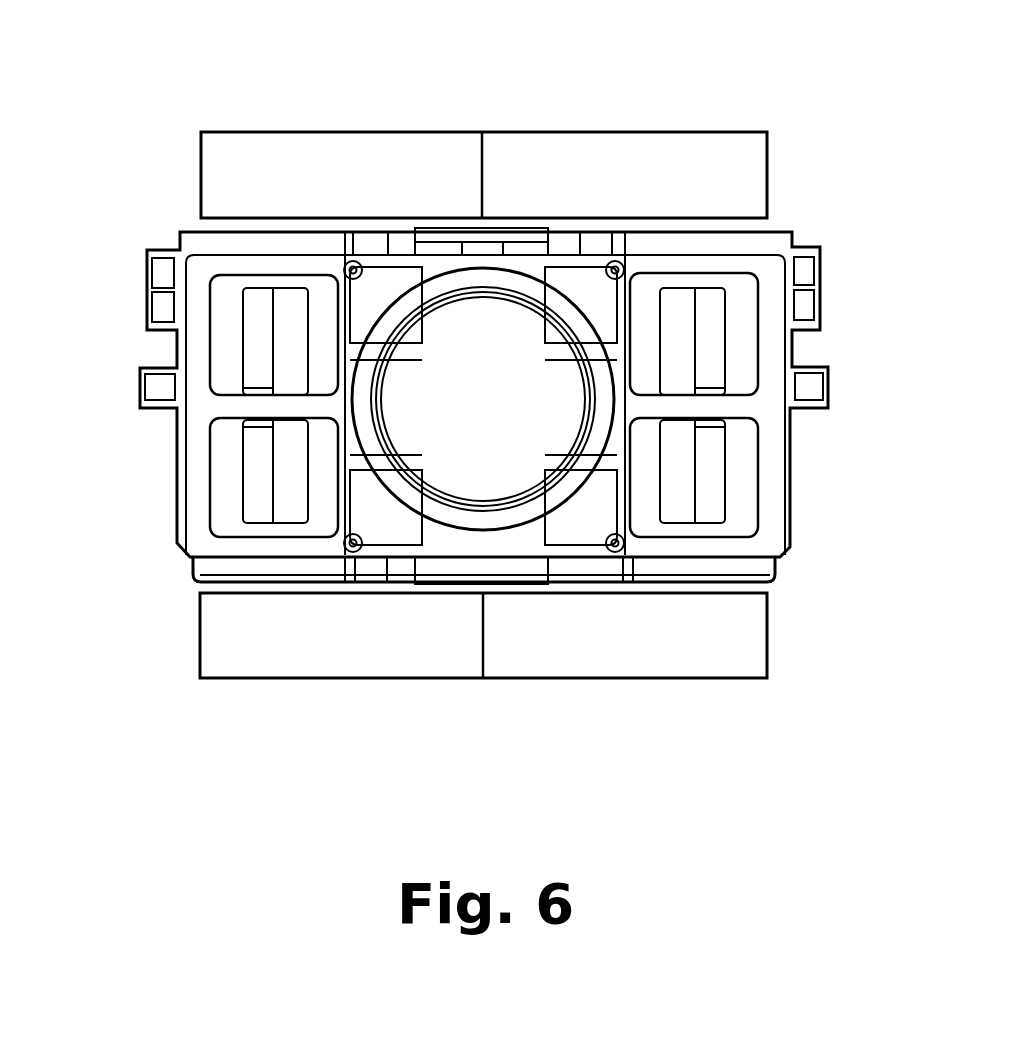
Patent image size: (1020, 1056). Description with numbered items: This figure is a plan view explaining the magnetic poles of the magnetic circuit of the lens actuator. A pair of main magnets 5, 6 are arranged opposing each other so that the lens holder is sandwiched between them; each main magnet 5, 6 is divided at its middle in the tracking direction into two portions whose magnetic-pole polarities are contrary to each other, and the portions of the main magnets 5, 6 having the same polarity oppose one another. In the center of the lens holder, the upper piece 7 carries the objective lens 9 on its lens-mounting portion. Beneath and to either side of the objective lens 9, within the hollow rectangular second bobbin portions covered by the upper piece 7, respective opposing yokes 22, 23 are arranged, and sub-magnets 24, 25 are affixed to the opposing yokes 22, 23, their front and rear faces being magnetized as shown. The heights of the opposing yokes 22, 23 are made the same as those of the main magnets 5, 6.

The main magnet 5 is at (694, 650).
The main magnet 6 is at (560, 165).
The upper piece 7 is at (770, 515).
The objective lens 9 is at (500, 480).
The opposing yoke 22 is at (240, 453).
The opposing yoke 23 is at (725, 337).
The sub-magnet 24 is at (283, 505).
The sub-magnet 25 is at (682, 445).